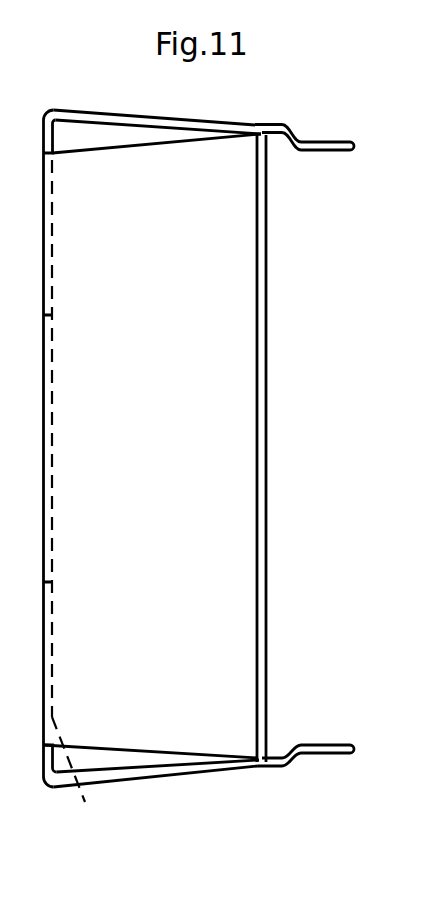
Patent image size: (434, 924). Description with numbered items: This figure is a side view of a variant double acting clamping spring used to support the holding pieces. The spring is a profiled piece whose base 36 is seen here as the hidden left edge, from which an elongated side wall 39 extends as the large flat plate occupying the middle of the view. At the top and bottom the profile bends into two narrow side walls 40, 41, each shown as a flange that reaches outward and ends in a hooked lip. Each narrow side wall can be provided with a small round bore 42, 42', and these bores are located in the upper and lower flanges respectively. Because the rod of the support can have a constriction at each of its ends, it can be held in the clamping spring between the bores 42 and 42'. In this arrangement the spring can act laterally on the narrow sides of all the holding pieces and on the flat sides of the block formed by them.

The base 36 is at (81, 775).
The elongated side wall 39 is at (208, 421).
The narrow side wall 40 is at (323, 147).
The narrow side wall 41 is at (322, 744).
The small round bore 42 is at (157, 112).
The small round bore 42' is at (152, 789).